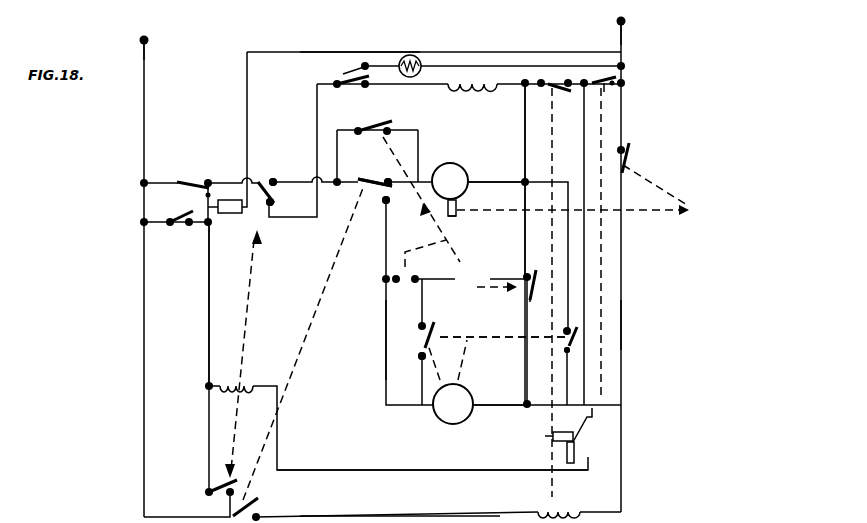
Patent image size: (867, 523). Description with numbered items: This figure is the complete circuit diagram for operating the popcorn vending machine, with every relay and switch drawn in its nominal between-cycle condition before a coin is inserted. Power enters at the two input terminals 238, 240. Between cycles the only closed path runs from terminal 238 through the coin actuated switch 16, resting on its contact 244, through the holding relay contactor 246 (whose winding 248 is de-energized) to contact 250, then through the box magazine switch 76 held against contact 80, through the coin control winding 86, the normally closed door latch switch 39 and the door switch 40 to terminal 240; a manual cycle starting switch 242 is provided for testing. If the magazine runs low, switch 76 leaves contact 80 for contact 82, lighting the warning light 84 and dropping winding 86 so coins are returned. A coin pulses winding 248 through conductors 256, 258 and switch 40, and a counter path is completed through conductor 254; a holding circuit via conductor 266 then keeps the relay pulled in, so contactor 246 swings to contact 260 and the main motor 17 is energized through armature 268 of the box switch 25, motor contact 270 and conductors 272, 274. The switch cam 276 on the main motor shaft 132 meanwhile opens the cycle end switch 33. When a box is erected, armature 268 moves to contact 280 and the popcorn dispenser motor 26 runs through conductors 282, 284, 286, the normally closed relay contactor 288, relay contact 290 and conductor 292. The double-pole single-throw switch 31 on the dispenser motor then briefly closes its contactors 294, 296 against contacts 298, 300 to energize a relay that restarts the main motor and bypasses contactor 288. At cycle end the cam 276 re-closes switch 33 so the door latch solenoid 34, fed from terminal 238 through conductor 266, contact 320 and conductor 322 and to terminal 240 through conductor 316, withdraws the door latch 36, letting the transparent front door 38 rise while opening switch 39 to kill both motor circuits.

The coin actuated switch 16 is at (192, 180).
The main motor 17 is at (450, 181).
The box switch 25 is at (363, 188).
The popcorn dispenser motor 26 is at (453, 404).
The double-pole single-throw switch 31 is at (460, 337).
The cycle end switch 33 is at (630, 148).
The door latch solenoid 34 is at (565, 509).
The door latch 36 is at (545, 436).
The transparent front door 38 is at (575, 447).
The door latch switch 39 is at (558, 77).
The door switch 40 is at (598, 82).
The box magazine switch 76 is at (352, 87).
The contact 80 is at (367, 88).
The contact 82 is at (340, 71).
The warning light 84 is at (422, 66).
The coin control winding 86 is at (472, 100).
The main motor shaft 132 is at (472, 202).
The power input terminal 238 is at (147, 45).
The power input terminal 240 is at (617, 23).
The manual cycle starting switch 242 is at (182, 225).
The contact 244 is at (212, 181).
The holding relay contactor 246 is at (260, 180).
The holding relay winding 248 is at (255, 389).
The contact 250 is at (288, 201).
The conductor 254 is at (372, 46).
The conductor 256 is at (210, 360).
The conductor 258 is at (353, 470).
The contact 260 is at (276, 180).
The conductor 266 is at (167, 517).
The armature 268 is at (380, 194).
The motor contact 270 is at (368, 167).
The conductor 272 is at (494, 180).
The conductor 274 is at (520, 127).
The switch cam 276 is at (450, 218).
The contact 280 is at (402, 209).
The conductor 282 is at (385, 342).
The conductor 284 is at (490, 407).
The conductor 286 is at (525, 378).
The relay contactor 288 is at (531, 300).
The relay contact 290 is at (525, 276).
The conductor 292 is at (527, 218).
The contactor 294 is at (420, 357).
The contactor 296 is at (572, 352).
The contact 298 is at (419, 326).
The contact 300 is at (578, 318).
The conductor 316 is at (621, 325).
The contact 320 is at (270, 508).
The conductor 322 is at (415, 513).